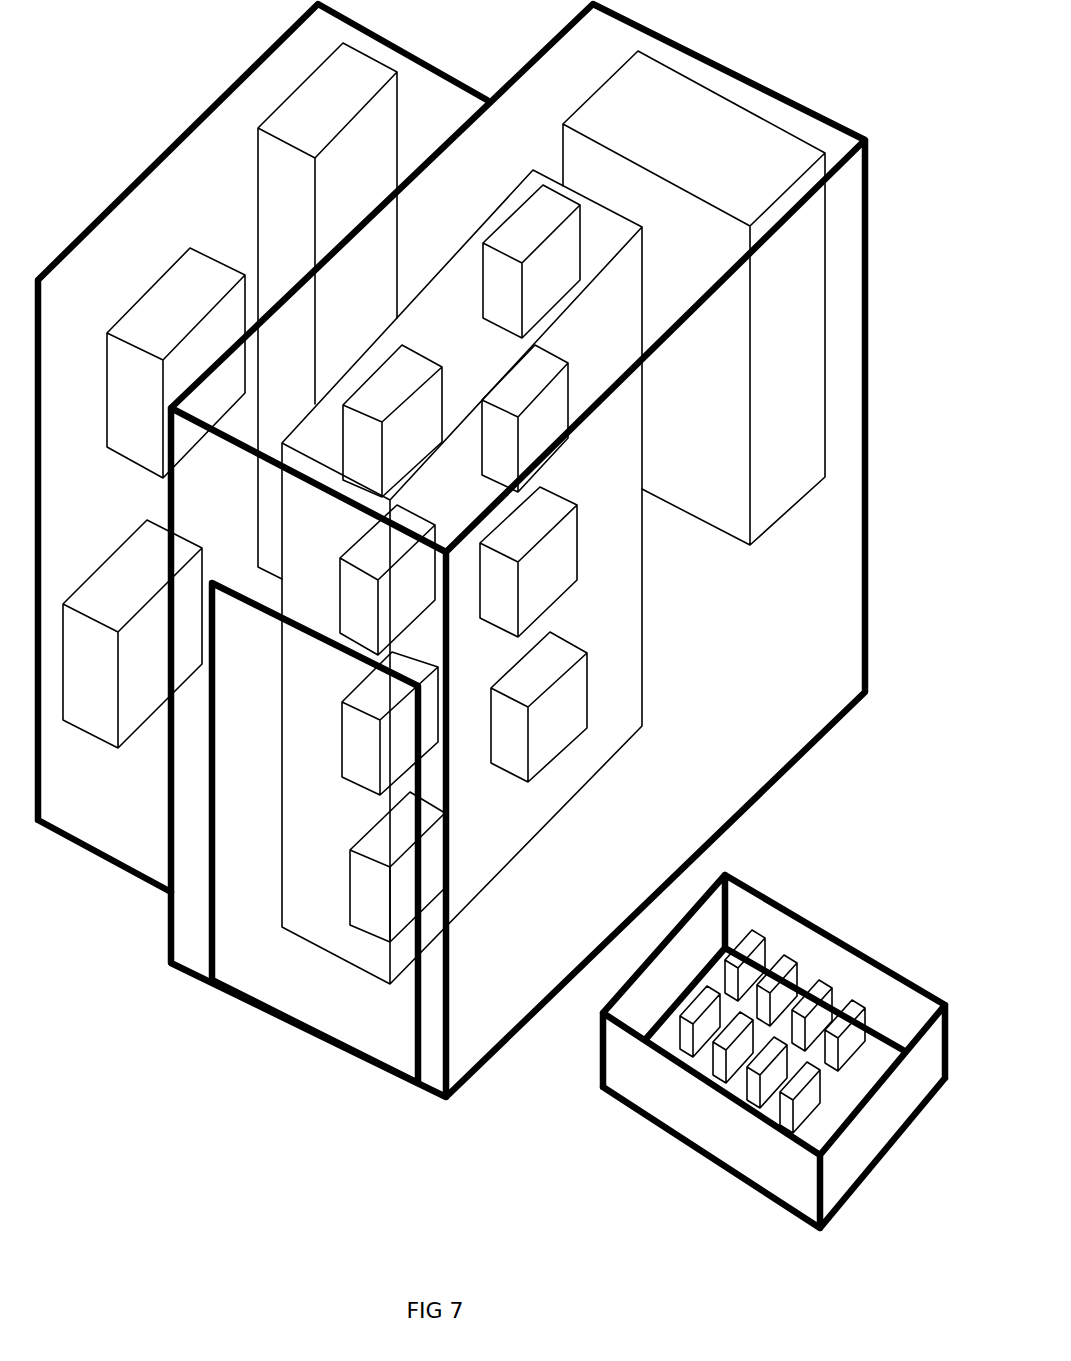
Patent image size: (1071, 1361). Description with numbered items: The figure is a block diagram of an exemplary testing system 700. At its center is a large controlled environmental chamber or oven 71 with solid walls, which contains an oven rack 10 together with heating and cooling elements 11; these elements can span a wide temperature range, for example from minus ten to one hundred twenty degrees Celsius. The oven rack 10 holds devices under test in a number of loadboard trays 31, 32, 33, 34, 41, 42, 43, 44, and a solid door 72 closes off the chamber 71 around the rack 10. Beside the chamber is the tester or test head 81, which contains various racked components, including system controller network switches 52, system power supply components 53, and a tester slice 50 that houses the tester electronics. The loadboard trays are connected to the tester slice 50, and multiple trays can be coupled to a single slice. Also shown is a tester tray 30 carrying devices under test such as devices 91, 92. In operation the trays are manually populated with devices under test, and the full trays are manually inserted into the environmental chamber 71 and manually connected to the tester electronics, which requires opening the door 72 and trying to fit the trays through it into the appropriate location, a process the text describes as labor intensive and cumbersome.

The cabinet assembly 700 is at (491, 614).
The oven rack 10 is at (586, 476).
The heating and cooling elements 11 is at (674, 146).
The tester tray 30 is at (774, 1051).
The loadboard tray 31 is at (536, 293).
The loadboard tray 32 is at (534, 431).
The loadboard tray 33 is at (534, 591).
The loadboard tray 34 is at (544, 738).
The loadboard tray 41 is at (344, 453).
The loadboard tray 42 is at (341, 621).
The loadboard tray 43 is at (348, 758).
The loadboard tray 44 is at (349, 910).
The tester slice 50 is at (314, 116).
The system controller network switches 52 is at (163, 316).
The system power supply components 53 is at (119, 590).
The environmental chamber 71 is at (626, 808).
The door 72 is at (248, 721).
The tester 81 is at (101, 811).
The device under test 91 is at (798, 1097).
The device under test 92 is at (843, 1035).